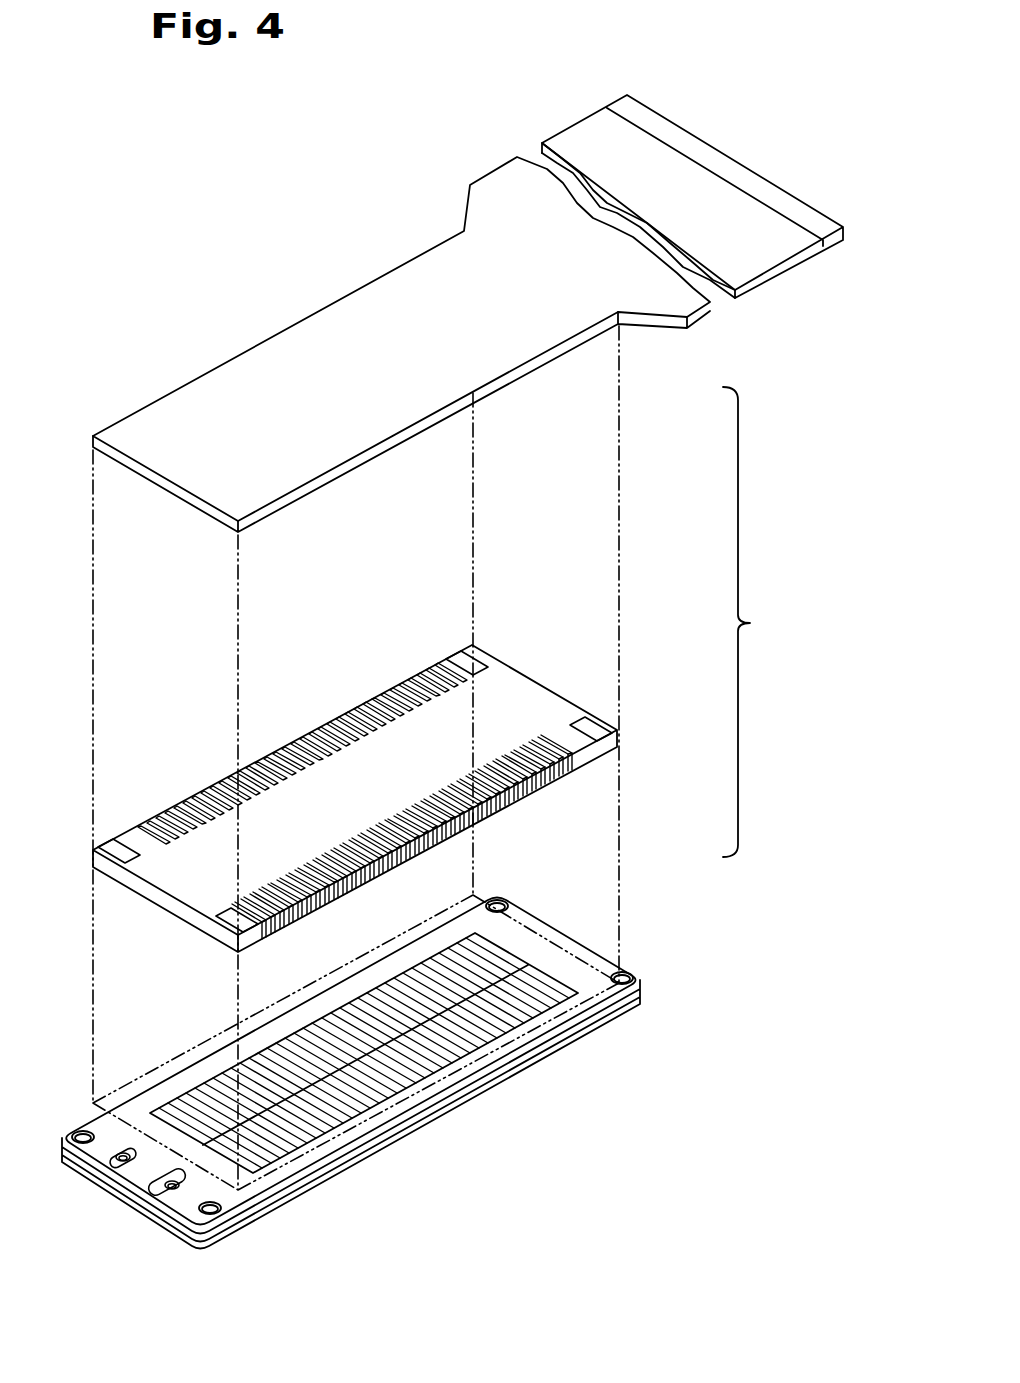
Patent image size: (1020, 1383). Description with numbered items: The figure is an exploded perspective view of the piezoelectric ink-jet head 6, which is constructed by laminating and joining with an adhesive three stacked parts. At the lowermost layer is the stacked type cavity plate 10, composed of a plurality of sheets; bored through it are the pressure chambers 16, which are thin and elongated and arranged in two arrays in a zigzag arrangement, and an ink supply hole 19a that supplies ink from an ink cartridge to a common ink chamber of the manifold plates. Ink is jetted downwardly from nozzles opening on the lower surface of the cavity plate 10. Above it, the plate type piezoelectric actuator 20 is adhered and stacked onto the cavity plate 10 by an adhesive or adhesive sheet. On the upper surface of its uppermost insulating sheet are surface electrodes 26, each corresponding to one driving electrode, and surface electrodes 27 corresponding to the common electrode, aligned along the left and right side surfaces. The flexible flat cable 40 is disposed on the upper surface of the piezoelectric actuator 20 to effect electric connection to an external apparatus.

The flexible flat cable 40 is at (656, 352).
The plate type piezoelectric actuator 20 is at (522, 634).
The surface electrodes 26 is at (336, 720).
The surface electrodes 27 is at (120, 840).
The stacked type cavity plate 10 is at (550, 880).
The pressure chambers 16 is at (293, 1090).
The ink supply hole 19a is at (148, 1170).
The piezoelectric ink-jet head 6 is at (751, 622).